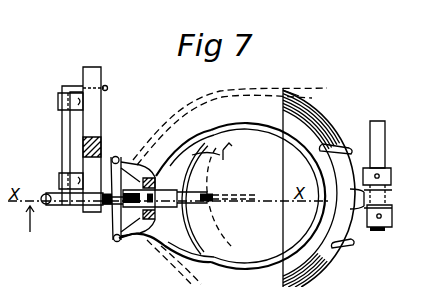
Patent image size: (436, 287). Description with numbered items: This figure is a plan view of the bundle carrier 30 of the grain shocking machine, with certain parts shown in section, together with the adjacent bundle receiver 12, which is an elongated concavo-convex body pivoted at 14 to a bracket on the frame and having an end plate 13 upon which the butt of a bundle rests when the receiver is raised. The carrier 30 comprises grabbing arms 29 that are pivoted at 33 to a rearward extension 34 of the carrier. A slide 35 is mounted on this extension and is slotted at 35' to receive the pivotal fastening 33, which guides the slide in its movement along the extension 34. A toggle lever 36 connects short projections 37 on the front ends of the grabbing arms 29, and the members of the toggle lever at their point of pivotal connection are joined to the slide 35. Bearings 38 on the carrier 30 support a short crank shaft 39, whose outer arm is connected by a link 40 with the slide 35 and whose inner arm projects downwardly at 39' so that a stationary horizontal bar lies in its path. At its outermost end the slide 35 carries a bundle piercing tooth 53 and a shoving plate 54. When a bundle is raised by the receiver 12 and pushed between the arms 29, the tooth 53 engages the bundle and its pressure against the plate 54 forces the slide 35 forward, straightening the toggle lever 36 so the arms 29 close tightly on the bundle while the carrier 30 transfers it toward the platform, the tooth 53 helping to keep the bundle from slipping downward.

The bundle receiver 12 is at (348, 226).
The end plate 13 is at (319, 187).
The pivot 14 is at (380, 151).
The grabbing arms 29 is at (251, 116).
The carrier 30 is at (100, 110).
The pivotal fastening 33 is at (185, 199).
The rearward extension 34 is at (112, 206).
The slide 35 is at (165, 208).
The slot 35' is at (115, 251).
The toggle lever 36 is at (139, 164).
The short projections 37 is at (116, 156).
The bearings 38 is at (58, 100).
The crank shaft 39 is at (51, 145).
The inner arm of crank shaft 39' is at (115, 86).
The link 40 is at (58, 206).
The bundle piercing tooth 53 is at (214, 204).
The shoving plate 54 is at (223, 195).